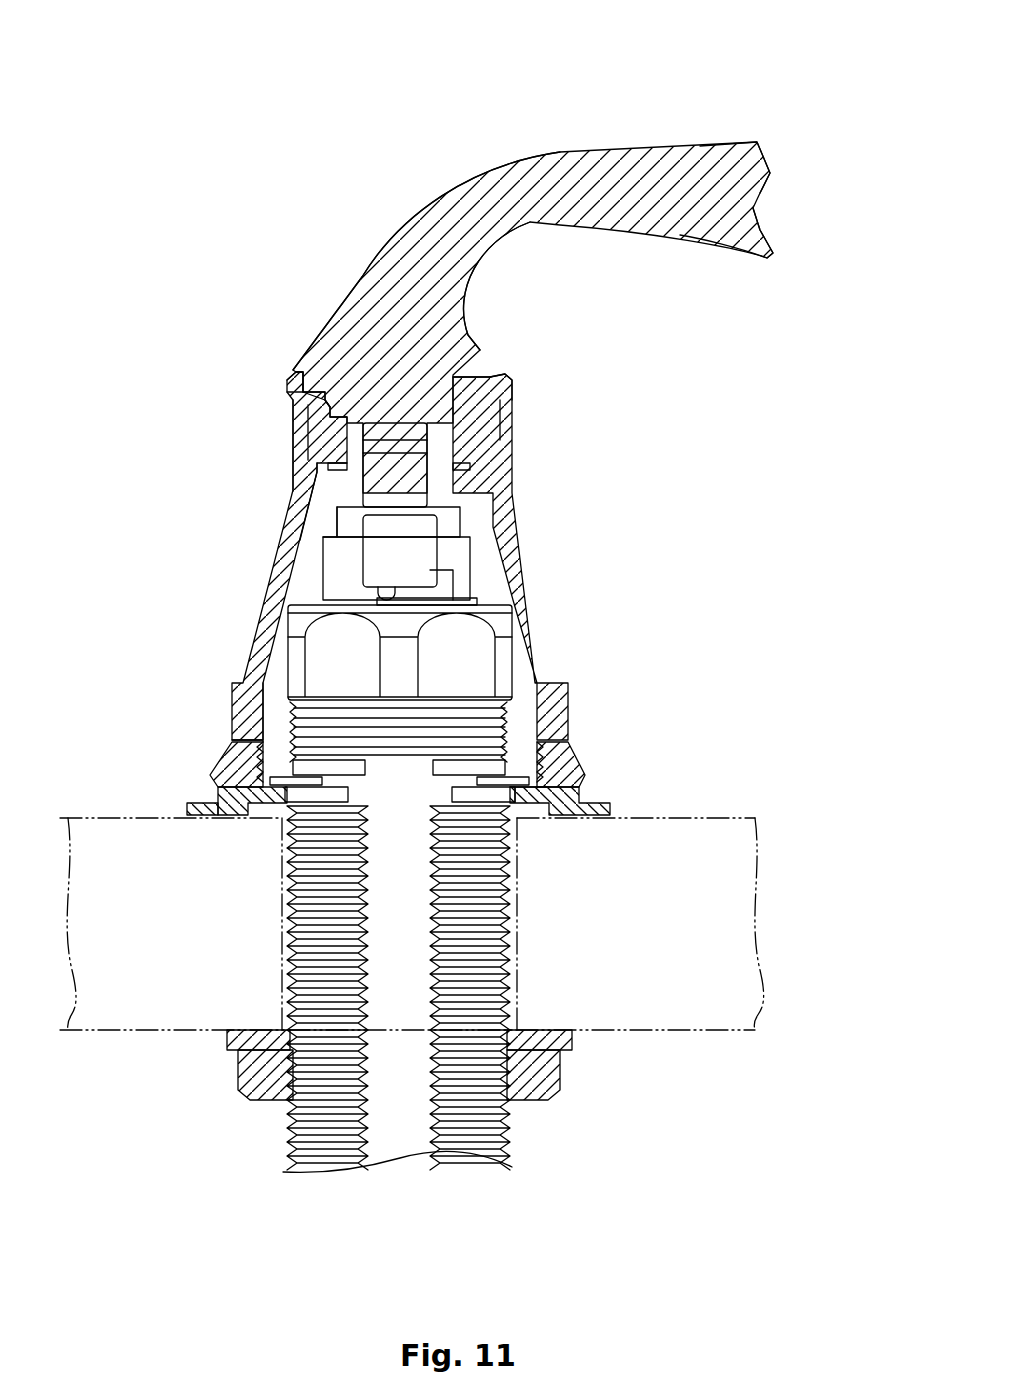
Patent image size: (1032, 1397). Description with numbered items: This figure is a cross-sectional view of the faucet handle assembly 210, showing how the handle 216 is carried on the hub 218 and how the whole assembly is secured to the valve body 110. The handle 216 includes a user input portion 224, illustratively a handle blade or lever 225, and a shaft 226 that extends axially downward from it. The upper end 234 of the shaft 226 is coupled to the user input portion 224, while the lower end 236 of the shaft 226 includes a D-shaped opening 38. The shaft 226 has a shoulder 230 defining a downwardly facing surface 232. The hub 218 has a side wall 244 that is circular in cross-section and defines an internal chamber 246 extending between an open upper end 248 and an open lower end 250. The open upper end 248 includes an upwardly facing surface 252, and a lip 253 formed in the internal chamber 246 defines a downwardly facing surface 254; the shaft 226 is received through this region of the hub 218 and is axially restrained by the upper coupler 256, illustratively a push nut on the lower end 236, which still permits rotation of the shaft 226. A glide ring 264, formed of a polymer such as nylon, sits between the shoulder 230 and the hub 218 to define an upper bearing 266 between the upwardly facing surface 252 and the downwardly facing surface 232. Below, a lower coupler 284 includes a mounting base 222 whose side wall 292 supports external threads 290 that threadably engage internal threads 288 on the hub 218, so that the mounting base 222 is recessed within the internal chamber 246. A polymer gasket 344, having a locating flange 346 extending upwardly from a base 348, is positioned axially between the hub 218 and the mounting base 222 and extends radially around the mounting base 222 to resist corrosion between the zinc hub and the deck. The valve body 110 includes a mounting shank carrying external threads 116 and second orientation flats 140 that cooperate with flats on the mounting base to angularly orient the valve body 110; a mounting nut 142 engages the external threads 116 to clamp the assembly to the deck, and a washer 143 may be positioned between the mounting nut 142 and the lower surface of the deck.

The faucet handle assembly 210 is at (281, 127).
The handle 216 is at (611, 139).
The user input portion 224 is at (748, 140).
The handle blade or lever 225 is at (780, 220).
The upper end of shaft 234 is at (350, 236).
The upwardly facing surface 252 is at (320, 390).
The glide ring 264 is at (481, 359).
The shoulder 230 is at (296, 372).
The upper bearing 266 is at (517, 383).
The shaft 226 is at (325, 425).
The downwardly facing surface 232 is at (500, 410).
The lip 253 is at (328, 455).
The D-shaped opening 38 is at (420, 435).
The downwardly facing surface 254 is at (310, 479).
The upper coupler 256 is at (467, 471).
The open upper end 248 is at (333, 494).
The lower end of shaft 236 is at (469, 498).
The internal chamber 246 is at (500, 578).
The hub 218 is at (253, 616).
The side wall 244 is at (532, 630).
The side wall 292 is at (258, 697).
The open lower end 250 is at (522, 719).
The lower coupler 284 is at (236, 744).
The mounting base 222 is at (557, 754).
The external threads 290 is at (252, 760).
The gasket 344 is at (612, 808).
The base 348 is at (200, 817).
The locating flange 346 is at (235, 805).
The internal threads 288 is at (522, 803).
The valve body 110 is at (520, 985).
The washer 143 is at (235, 1062).
The mounting nut 142 is at (565, 1065).
The external threads 116 is at (512, 1128).
The second orientation flats 140 is at (400, 1160).